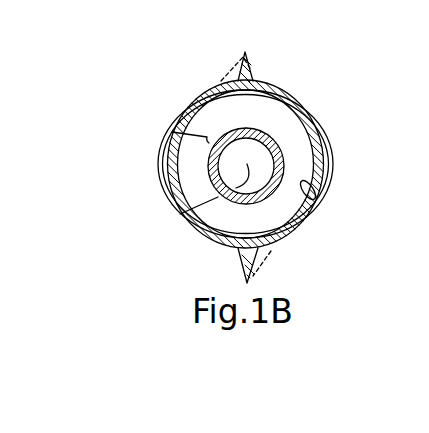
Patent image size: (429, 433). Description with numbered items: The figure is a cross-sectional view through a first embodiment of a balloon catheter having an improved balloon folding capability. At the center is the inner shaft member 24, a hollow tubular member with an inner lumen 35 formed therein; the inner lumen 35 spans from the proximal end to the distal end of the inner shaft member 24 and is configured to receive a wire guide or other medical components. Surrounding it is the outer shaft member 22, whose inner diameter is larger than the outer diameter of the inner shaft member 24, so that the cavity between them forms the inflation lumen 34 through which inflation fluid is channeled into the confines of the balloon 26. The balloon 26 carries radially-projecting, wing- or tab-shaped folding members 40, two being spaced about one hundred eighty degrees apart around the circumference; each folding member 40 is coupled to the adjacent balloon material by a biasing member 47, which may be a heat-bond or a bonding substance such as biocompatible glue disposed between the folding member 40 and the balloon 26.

The outer shaft member 22 is at (318, 200).
The inner shaft member 24 is at (210, 157).
The balloon 26 is at (331, 147).
The inflation lumen 34 is at (172, 132).
The inner lumen 35 is at (180, 214).
The folding member 40 is at (253, 58).
The biasing member 47 is at (232, 63).